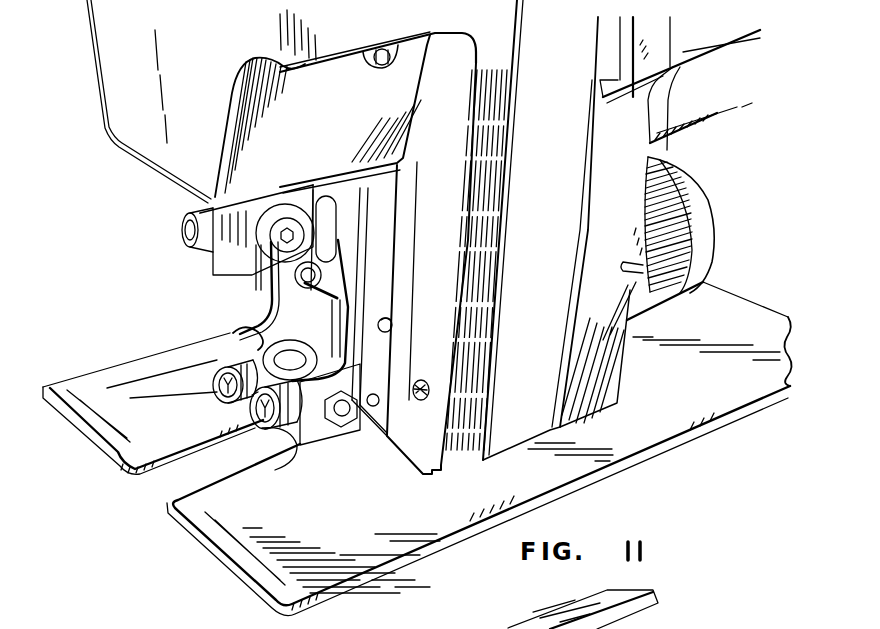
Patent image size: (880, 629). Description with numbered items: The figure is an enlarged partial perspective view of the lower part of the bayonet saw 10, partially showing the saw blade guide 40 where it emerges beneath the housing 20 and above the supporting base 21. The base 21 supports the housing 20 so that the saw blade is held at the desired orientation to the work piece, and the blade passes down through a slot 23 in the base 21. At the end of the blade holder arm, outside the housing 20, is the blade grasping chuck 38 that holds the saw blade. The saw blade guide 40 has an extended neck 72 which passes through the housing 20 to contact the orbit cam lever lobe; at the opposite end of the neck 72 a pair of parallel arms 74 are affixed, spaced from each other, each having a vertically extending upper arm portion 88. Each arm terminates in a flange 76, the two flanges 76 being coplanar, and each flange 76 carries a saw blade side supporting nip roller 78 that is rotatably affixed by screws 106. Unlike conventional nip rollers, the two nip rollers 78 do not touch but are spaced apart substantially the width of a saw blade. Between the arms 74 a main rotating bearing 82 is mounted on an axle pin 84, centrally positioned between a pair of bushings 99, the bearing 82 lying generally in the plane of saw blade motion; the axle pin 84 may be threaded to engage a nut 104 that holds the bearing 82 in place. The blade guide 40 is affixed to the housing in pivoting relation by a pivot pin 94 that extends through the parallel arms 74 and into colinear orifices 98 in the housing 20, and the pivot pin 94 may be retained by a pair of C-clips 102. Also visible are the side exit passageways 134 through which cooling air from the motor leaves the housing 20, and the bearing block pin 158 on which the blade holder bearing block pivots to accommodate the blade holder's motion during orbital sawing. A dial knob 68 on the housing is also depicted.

The bayonet saw 10 is at (133, 204).
The housing 20 is at (150, 135).
The supporting base 21 is at (230, 565).
The slot 23 is at (165, 468).
The blade grasping chuck 38 is at (200, 242).
The saw blade guide 40 is at (277, 452).
The dial knob 68 is at (712, 208).
The neck 72 is at (620, 600).
The parallel arms 74 is at (270, 300).
The flange 76 is at (240, 357).
The nip roller 78 is at (213, 364).
The main rotating bearing 82 is at (292, 350).
The axle pin 84 is at (343, 417).
The upper arm portion 88 is at (268, 275).
The pivot pin 94 is at (312, 282).
The colinear orifices 98 is at (388, 328).
The bushings 99 is at (240, 334).
The C-clips 102 is at (331, 205).
The nut 104 is at (333, 440).
The screws 106 is at (253, 417).
The exit passageways 134 is at (607, 50).
The bearing block pin 158 is at (387, 55).